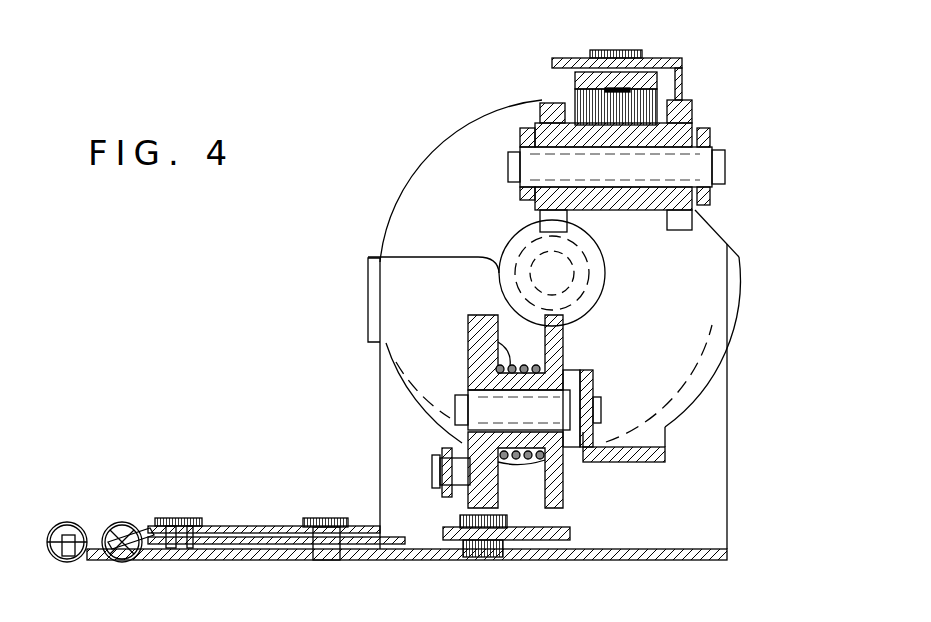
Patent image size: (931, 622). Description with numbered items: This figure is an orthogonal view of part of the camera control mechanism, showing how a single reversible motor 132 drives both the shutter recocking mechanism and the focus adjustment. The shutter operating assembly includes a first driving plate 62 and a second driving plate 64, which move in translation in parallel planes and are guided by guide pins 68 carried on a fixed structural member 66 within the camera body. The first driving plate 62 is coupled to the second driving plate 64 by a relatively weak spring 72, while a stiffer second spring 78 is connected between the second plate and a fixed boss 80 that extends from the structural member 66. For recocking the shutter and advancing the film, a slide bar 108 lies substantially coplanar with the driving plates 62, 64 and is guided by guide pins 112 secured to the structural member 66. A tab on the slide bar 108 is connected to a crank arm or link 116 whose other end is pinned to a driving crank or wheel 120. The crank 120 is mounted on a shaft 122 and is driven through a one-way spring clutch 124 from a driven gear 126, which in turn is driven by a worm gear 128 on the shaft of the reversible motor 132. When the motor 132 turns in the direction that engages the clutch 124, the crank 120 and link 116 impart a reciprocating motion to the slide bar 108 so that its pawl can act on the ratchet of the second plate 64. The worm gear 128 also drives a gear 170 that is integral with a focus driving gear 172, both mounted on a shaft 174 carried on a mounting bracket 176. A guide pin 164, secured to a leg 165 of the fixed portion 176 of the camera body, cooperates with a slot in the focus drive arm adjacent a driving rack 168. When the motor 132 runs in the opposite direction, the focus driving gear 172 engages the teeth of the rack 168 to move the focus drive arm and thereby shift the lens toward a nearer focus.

The first driving plate 62 is at (257, 525).
The second driving plate 64 is at (265, 561).
The fixed structural member 66 is at (405, 560).
The guide pins 68 is at (167, 518).
The spring 72 is at (118, 522).
The second spring 78 is at (51, 533).
The fixed boss 80 is at (64, 549).
The slide bar 108 is at (555, 541).
The guide pins 112 is at (497, 520).
The crank arm or link 116 is at (445, 452).
The driving crank or wheel 120 is at (476, 327).
The shaft 122 is at (456, 405).
The one-way spring clutch 124 is at (527, 372).
The driven gear 126 is at (563, 500).
The worm gear 128 is at (602, 293).
The reversible motor 132 is at (412, 188).
The guide pin 164 is at (612, 50).
The leg 165 is at (574, 80).
The driving rack 168 is at (683, 80).
The gear 170 is at (547, 107).
The focus driving gear 172 is at (692, 107).
The shaft 174 is at (725, 167).
The mounting bracket 176 is at (520, 134).